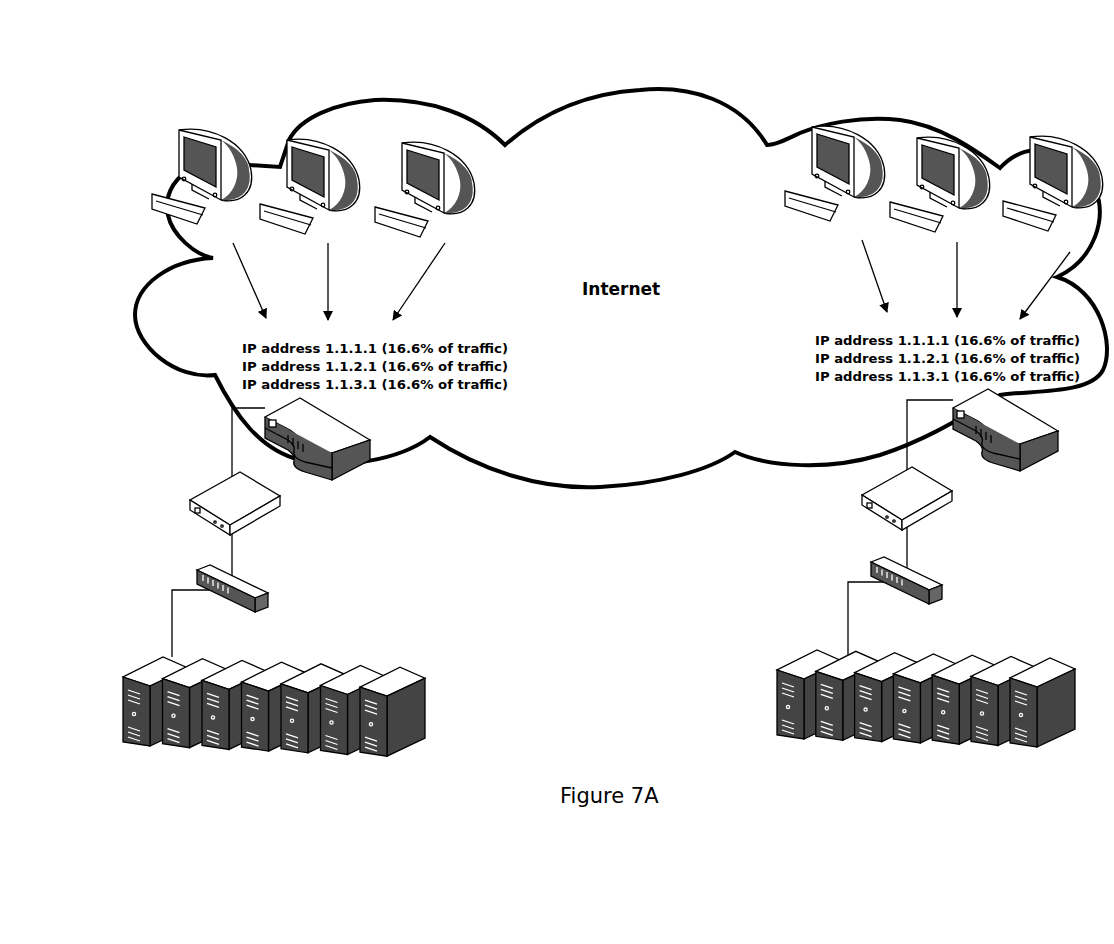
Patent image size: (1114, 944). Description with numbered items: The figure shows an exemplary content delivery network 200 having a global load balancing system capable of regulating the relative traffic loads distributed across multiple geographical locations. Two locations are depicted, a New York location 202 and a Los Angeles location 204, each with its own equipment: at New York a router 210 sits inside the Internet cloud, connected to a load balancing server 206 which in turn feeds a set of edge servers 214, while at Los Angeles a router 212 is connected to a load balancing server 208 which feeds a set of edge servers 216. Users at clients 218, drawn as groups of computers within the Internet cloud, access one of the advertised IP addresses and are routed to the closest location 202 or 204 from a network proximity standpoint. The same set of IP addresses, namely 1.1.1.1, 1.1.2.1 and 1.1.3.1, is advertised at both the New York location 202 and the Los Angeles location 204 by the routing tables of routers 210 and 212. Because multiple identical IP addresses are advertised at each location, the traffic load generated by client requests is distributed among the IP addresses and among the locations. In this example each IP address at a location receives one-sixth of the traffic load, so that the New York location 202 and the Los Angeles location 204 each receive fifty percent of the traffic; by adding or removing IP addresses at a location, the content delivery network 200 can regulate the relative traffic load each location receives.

The content delivery network 200 is at (644, 756).
The New York location 202 is at (386, 556).
The Los Angeles location 204 is at (1030, 556).
The load balancing server 206 is at (195, 495).
The load balancing server 208 is at (864, 493).
The router 210 is at (367, 423).
The router 212 is at (1047, 417).
The set of edge servers 214 is at (412, 763).
The set of edge servers 216 is at (1090, 762).
The clients 218 is at (1097, 122).